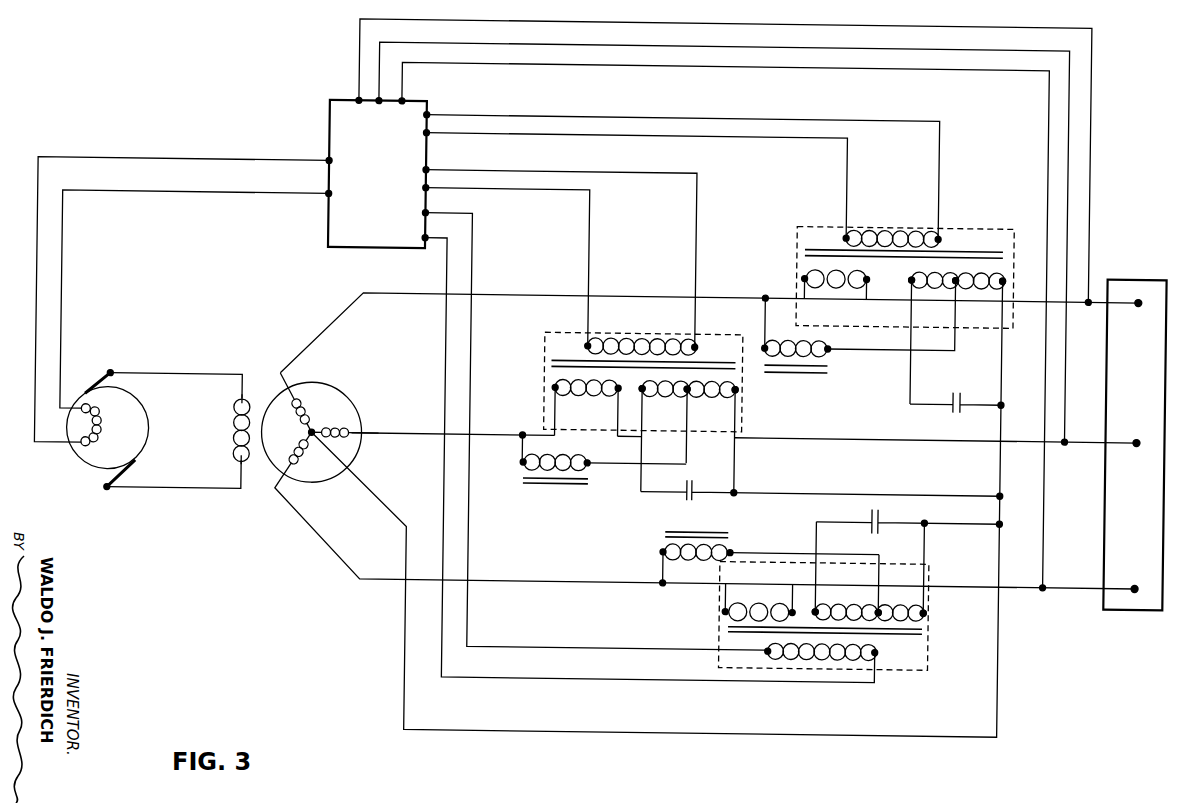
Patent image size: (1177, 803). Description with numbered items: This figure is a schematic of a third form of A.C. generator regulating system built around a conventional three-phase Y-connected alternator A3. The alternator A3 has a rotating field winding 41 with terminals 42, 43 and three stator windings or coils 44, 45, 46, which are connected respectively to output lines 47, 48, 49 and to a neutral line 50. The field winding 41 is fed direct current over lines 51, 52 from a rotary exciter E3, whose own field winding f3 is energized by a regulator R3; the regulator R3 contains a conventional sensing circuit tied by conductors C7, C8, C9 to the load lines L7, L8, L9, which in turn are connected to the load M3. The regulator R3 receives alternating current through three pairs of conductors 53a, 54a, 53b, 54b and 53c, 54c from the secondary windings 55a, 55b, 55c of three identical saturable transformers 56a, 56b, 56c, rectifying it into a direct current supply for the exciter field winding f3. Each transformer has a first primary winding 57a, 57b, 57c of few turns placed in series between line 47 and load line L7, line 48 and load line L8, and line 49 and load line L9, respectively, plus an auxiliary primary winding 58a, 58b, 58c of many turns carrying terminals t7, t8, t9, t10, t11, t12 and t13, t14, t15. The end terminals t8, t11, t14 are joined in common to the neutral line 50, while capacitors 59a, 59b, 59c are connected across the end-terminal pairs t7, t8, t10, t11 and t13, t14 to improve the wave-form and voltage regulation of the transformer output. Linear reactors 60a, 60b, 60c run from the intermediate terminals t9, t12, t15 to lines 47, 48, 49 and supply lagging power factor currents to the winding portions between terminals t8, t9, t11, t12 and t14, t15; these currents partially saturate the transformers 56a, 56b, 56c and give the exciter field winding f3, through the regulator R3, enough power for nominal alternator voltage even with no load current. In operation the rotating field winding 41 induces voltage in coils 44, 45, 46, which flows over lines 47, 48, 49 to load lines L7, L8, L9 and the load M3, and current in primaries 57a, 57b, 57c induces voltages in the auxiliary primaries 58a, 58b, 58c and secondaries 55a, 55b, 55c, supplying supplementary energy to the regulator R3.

The regulator R3 is at (326, 250).
The rotary exciter E3 is at (140, 400).
The field winding f3 is at (84, 418).
The alternator A3 is at (362, 462).
The load M3 is at (1128, 272).
The field winding 41 is at (235, 433).
The terminal 42 is at (247, 398).
The terminal 43 is at (247, 470).
The stator winding 44 is at (300, 398).
The stator winding 45 is at (342, 430).
The stator winding 46 is at (298, 470).
The output line 47 is at (375, 296).
The output line 48 is at (505, 438).
The output line 49 is at (540, 582).
The neutral line 50 is at (537, 732).
The line 51 is at (202, 379).
The line 52 is at (178, 493).
The conductor 53a is at (706, 117).
The conductor 53b is at (605, 172).
The conductor 53c is at (470, 232).
The conductor 54a is at (718, 137).
The conductor 54b is at (580, 190).
The conductor 54c is at (448, 282).
The secondary winding 55a is at (880, 230).
The secondary winding 55b is at (652, 340).
The secondary winding 55c is at (845, 658).
The saturable transformer 56a is at (795, 228).
The saturable transformer 56b is at (545, 360).
The saturable transformer 56c is at (722, 620).
The first primary winding 57a is at (798, 277).
The first primary winding 57b is at (556, 390).
The first primary winding 57c is at (745, 604).
The auxiliary primary winding 58a is at (960, 270).
The auxiliary primary winding 58b is at (742, 401).
The auxiliary primary winding 58c is at (931, 616).
The capacitor 59a is at (952, 410).
The capacitor 59b is at (687, 502).
The capacitor 59c is at (877, 504).
The linear reactor 60a is at (830, 349).
The linear reactor 60b is at (548, 484).
The linear reactor 60c is at (705, 536).
The conductor C7 is at (1092, 84).
The conductor C8 is at (1068, 128).
The conductor C9 is at (1047, 165).
The load line L7 is at (1105, 299).
The load line L8 is at (1082, 436).
The load line L9 is at (1075, 584).
The end terminal t7 is at (907, 276).
The end terminal t8 is at (1004, 276).
The intermediate terminal t9 is at (955, 284).
The end terminal t10 is at (644, 394).
The end terminal t11 is at (738, 390).
The intermediate terminal t12 is at (688, 394).
The end terminal t13 is at (820, 602).
The end terminal t14 is at (928, 602).
The intermediate terminal t15 is at (882, 602).